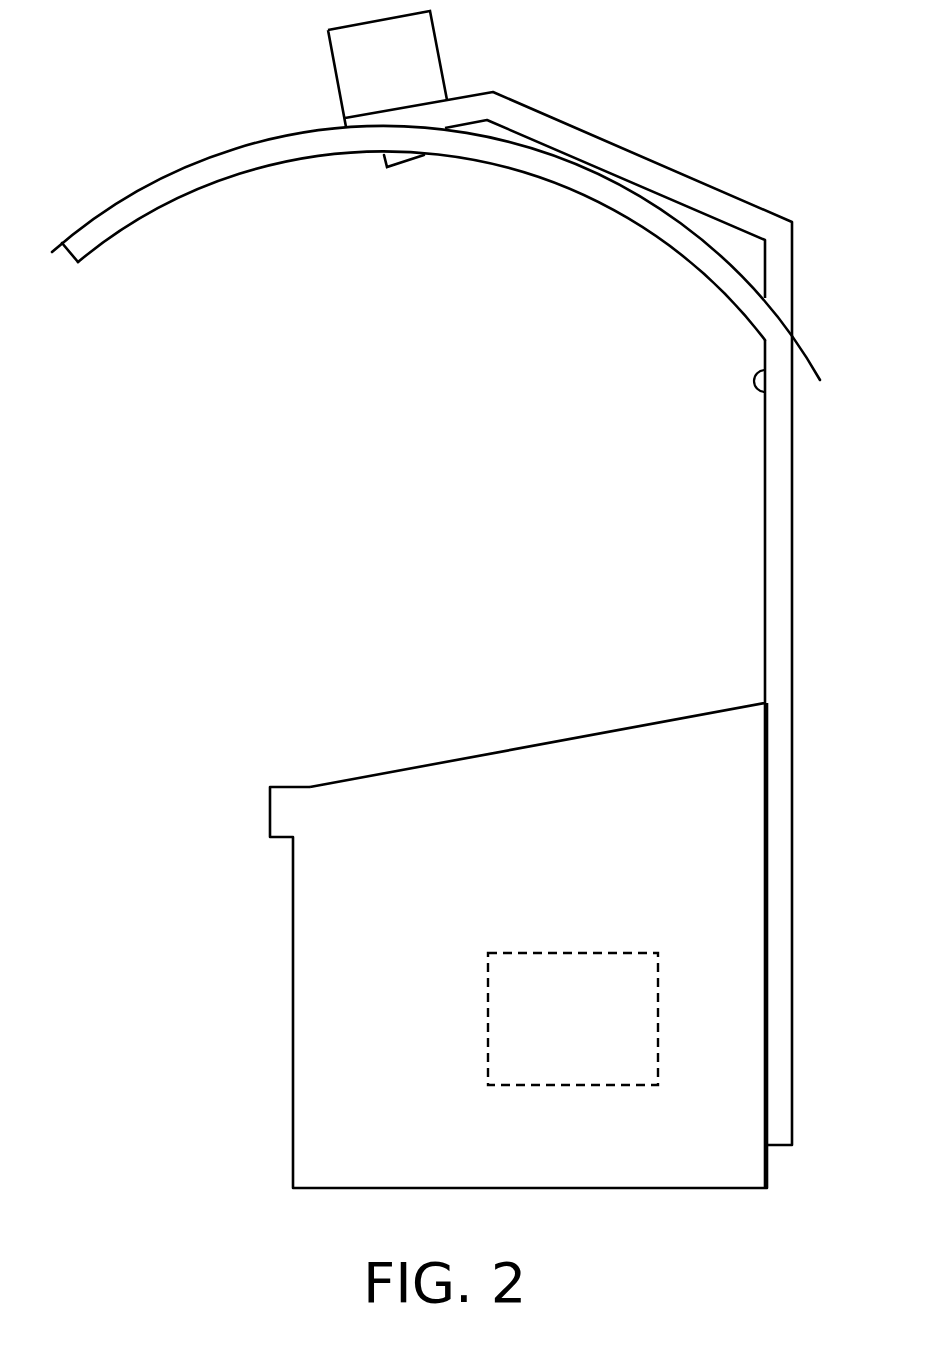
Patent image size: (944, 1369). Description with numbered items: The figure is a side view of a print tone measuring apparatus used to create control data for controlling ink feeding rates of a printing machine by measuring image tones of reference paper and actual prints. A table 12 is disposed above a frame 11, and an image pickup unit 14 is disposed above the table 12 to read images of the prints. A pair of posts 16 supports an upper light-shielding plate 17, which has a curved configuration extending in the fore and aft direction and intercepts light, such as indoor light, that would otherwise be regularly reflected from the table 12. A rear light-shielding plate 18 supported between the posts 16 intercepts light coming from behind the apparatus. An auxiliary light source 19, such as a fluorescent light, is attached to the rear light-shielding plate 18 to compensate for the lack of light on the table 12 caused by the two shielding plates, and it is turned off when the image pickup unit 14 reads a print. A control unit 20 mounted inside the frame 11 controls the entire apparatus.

The frame 11 is at (315, 1015).
The table 12 is at (558, 740).
The image pickup unit 14 is at (418, 63).
The posts 16 is at (773, 470).
The upper light-shielding plate 17 is at (248, 142).
The rear light-shielding plate 18 is at (766, 535).
The auxiliary light source 19 is at (750, 380).
The control unit 20 is at (585, 965).